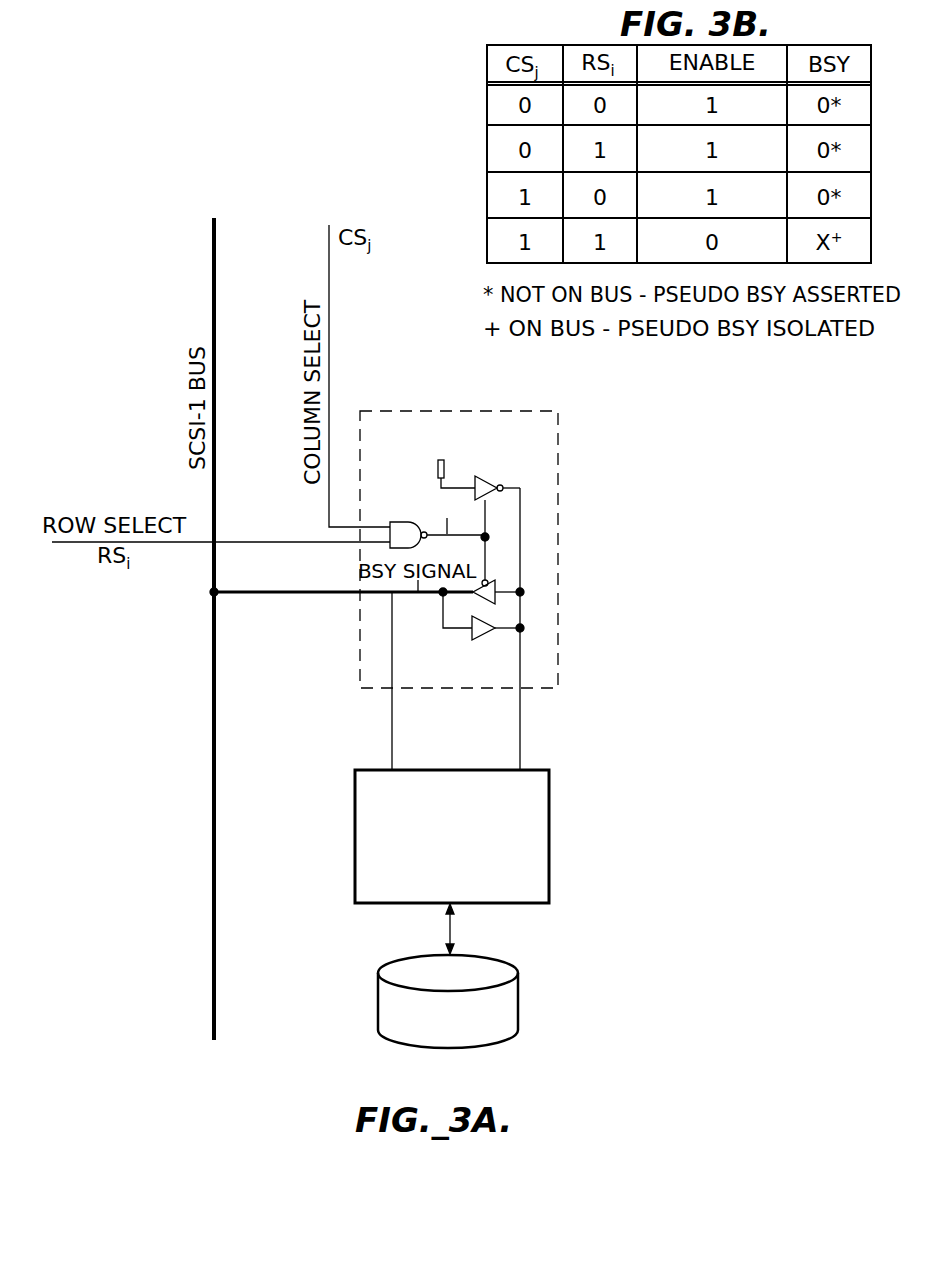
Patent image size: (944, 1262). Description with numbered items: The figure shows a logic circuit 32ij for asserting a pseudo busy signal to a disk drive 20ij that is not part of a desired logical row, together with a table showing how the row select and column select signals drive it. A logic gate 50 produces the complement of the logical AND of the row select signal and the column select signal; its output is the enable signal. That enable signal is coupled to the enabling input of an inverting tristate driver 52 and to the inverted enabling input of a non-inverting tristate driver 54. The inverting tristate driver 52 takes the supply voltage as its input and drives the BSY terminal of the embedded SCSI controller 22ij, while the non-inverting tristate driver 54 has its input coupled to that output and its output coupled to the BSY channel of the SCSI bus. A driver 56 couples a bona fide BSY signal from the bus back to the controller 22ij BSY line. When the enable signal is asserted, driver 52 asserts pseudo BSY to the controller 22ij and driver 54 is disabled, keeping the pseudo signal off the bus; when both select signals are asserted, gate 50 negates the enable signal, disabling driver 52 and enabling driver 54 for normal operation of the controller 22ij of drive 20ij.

The drive 20ij is at (518, 1000).
The controller 22ij is at (549, 795).
The logic circuit 32ij is at (558, 418).
The logic gate 50 is at (396, 520).
The inverting tristate driver 52 is at (492, 480).
The non-inverting tristate driver 54 is at (490, 578).
The driver 56 is at (476, 640).